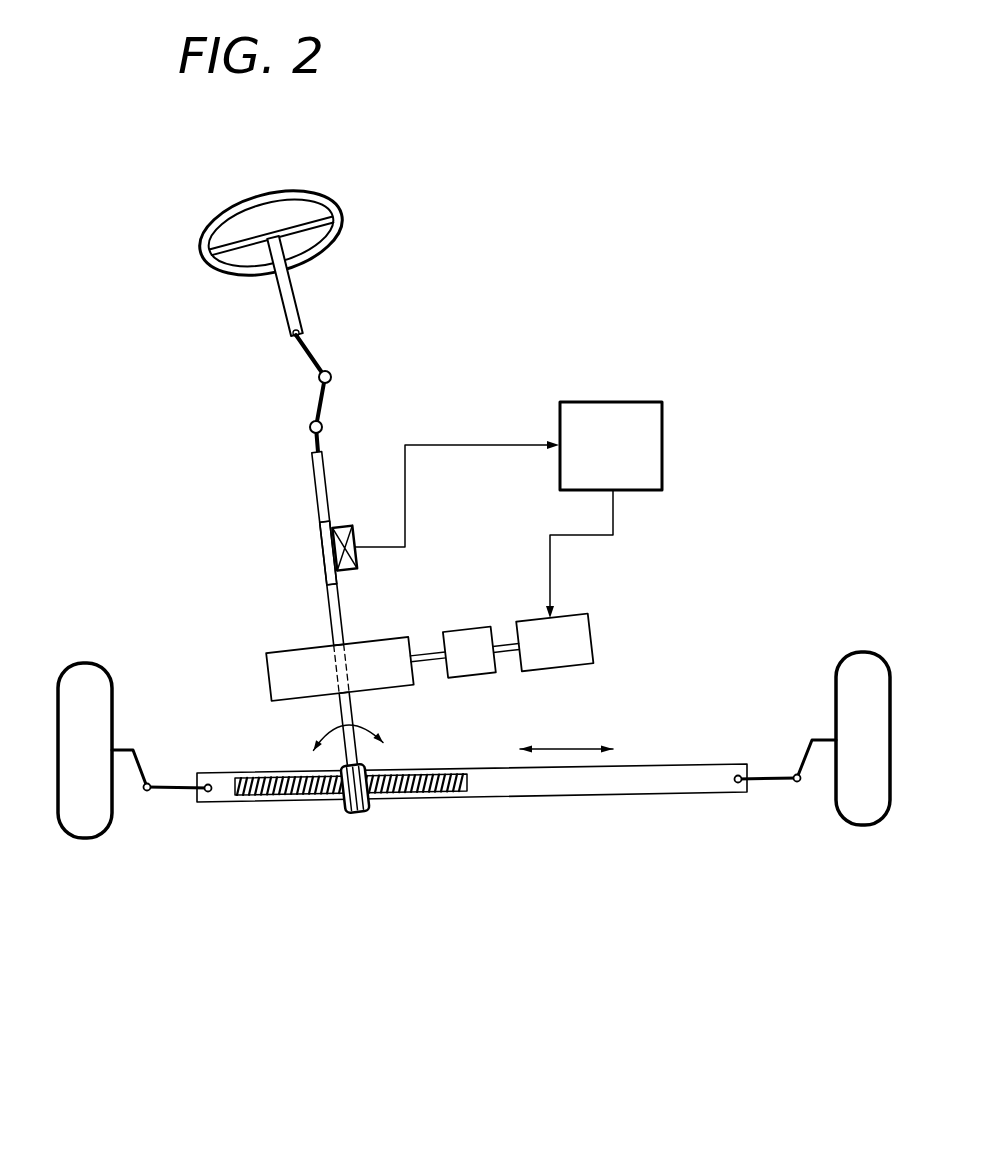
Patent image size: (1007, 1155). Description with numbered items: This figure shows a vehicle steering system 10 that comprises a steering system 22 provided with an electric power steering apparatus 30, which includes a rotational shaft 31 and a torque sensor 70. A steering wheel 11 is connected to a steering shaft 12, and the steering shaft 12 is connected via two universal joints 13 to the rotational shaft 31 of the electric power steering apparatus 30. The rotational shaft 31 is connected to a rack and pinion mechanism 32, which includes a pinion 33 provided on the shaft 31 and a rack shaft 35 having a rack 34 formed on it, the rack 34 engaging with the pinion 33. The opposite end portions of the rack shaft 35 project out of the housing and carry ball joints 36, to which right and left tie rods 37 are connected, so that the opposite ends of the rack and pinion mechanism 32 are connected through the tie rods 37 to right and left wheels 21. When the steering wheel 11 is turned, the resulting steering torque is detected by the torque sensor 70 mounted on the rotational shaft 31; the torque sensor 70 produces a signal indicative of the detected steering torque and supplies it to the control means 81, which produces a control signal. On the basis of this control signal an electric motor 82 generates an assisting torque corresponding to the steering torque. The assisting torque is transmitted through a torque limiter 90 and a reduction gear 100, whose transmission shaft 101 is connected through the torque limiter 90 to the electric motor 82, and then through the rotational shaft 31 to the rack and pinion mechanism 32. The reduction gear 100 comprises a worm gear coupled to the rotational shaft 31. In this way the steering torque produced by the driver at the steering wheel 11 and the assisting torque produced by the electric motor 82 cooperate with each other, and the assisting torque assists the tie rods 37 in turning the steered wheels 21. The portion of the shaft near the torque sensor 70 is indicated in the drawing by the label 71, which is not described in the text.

The vehicle steering system 10 is at (604, 192).
The steering wheel 11 is at (308, 195).
The steering shaft 12 is at (299, 300).
The universal joints 13 is at (328, 375).
The steering system 22 is at (288, 344).
The electric power steering apparatus 30 is at (452, 658).
The rotational shaft 31 is at (323, 473).
The rack and pinion mechanism 32 is at (472, 874).
The pinion 33 is at (369, 850).
The rack 34 is at (305, 800).
The rack shaft 35 is at (495, 802).
The ball joints 36 is at (212, 794).
The tie rods 37 is at (163, 790).
The wheels 21 is at (92, 830).
The torque sensor 70 is at (342, 528).
The torsion bar 71 is at (324, 537).
The control means 81 is at (625, 405).
The electric motor 82 is at (575, 625).
The torque limiter 90 is at (462, 636).
The reduction gear 100 is at (377, 645).
The transmission shaft 101 is at (431, 664).